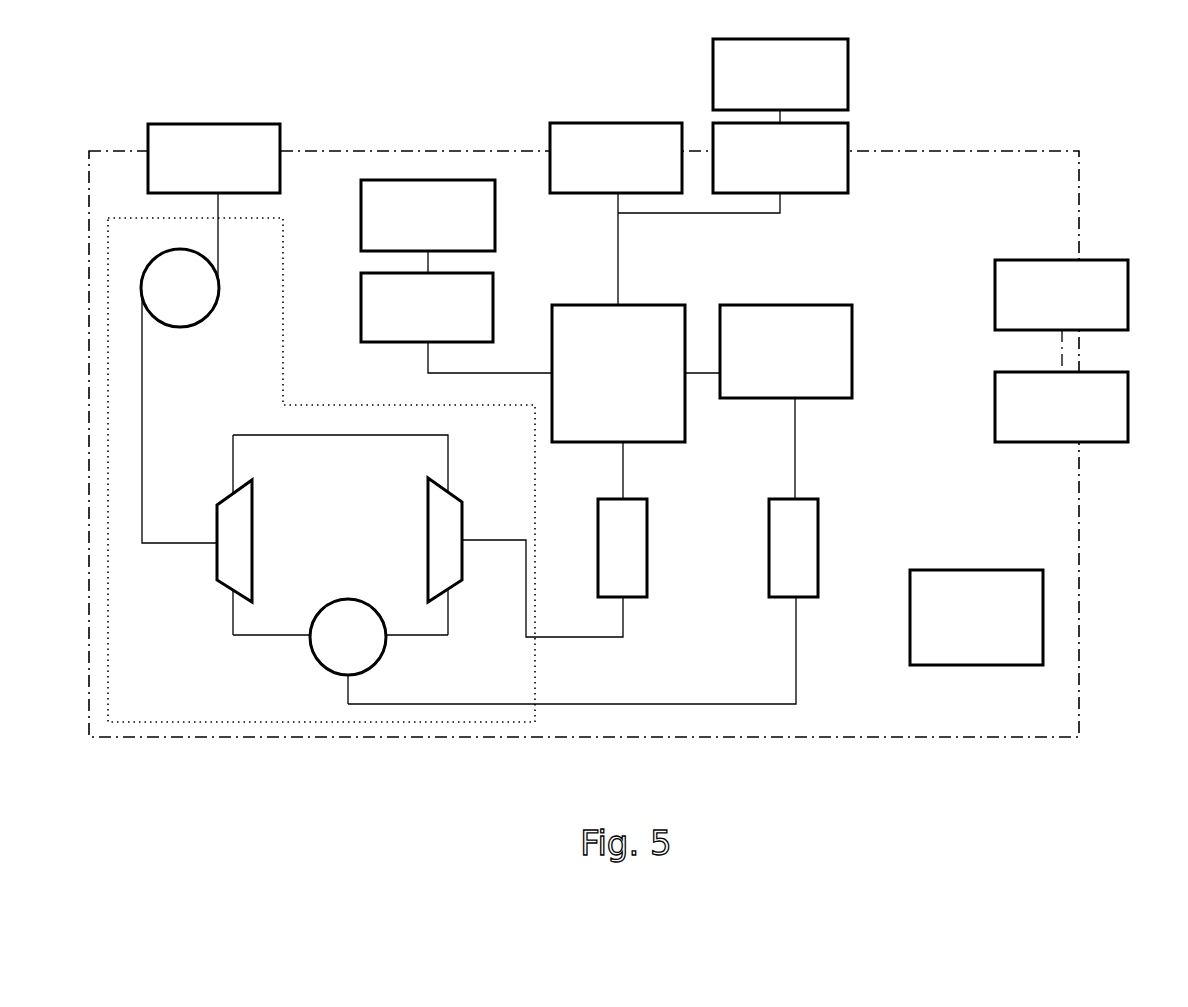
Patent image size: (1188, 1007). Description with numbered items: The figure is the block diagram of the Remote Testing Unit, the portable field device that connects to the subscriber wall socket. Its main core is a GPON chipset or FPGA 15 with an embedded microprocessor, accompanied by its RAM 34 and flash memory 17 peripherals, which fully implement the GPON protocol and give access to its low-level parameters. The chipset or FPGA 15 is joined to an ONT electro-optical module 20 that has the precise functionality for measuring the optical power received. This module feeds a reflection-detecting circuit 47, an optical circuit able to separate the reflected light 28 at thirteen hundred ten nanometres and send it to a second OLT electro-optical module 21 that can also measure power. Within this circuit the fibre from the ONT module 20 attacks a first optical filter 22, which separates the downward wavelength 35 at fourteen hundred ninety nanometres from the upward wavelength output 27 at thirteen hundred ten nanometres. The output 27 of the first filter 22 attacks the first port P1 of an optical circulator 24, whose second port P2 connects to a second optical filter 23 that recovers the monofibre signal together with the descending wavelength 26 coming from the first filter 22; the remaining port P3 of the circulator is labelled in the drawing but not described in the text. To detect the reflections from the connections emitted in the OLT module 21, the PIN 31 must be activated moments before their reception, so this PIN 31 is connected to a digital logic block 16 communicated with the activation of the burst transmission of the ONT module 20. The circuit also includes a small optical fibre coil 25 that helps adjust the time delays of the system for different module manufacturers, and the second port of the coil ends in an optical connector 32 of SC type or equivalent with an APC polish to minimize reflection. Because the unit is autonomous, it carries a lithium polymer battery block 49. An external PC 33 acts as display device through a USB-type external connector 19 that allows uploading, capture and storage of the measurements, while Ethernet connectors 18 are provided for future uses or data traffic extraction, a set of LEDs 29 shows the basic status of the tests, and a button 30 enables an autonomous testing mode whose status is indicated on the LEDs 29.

The GPON chipset or FPGA 15 is at (618, 373).
The digital logic block 16 is at (786, 351).
The flash memory 17 is at (427, 307).
The Ethernet connectors 18 is at (616, 158).
The USB-type external connector 19 is at (780, 158).
The ONT electro-optical module 20 is at (622, 548).
The OLT electro-optical module 21 is at (793, 548).
The first optical filter 22 is at (442, 517).
The second optical filter 23 is at (235, 517).
The optical circulator 24 is at (348, 651).
The optical fibre coil 25 is at (180, 288).
The descending wavelength 26 is at (267, 638).
The upward wavelength output 27 is at (417, 638).
The reflected light 28 is at (795, 623).
The set of LEDs 29 is at (1061, 295).
The button 30 is at (1061, 407).
The PIN (reset pin) 31 is at (795, 427).
The optical connector 32 is at (214, 158).
The external PC 33 is at (780, 74).
The RAM 34 is at (428, 215).
The downward wavelength 35 is at (338, 437).
The reflection-detecting circuit 47 is at (275, 253).
The battery block 49 is at (976, 617).
The first port P1 is at (387, 632).
The second port P2 is at (310, 633).
The third pressure point P3 is at (348, 675).